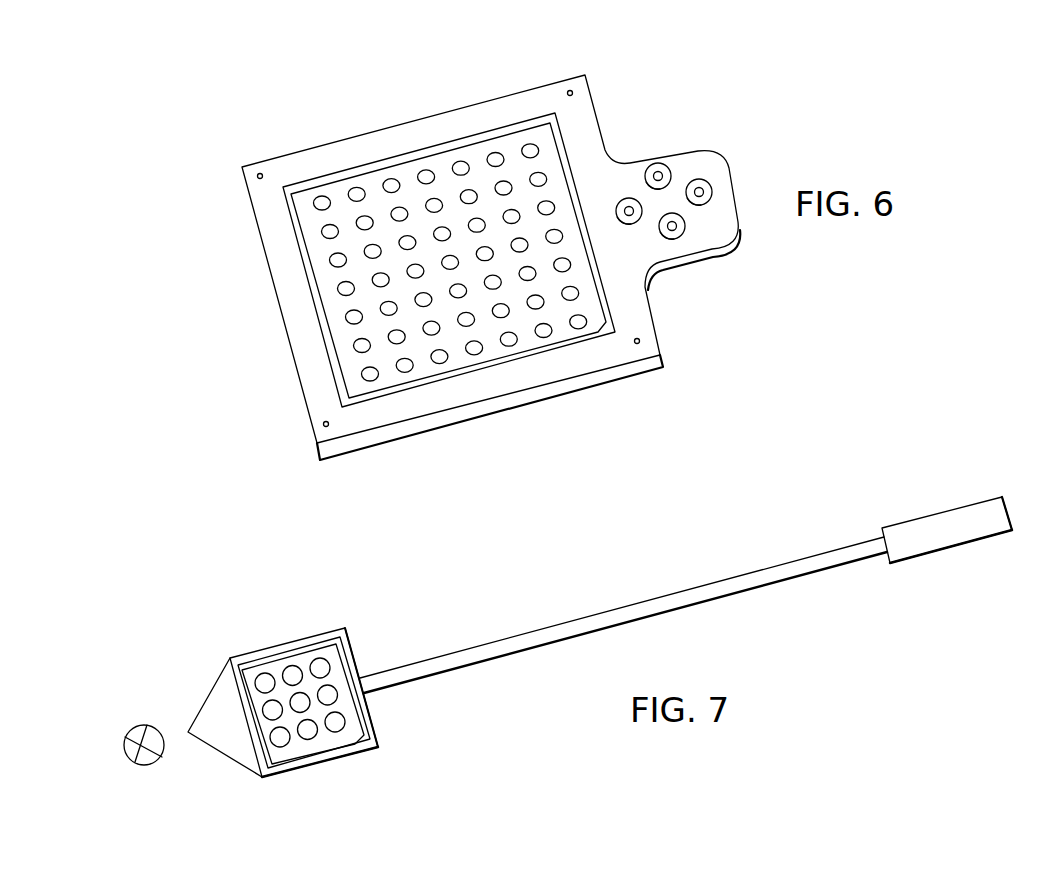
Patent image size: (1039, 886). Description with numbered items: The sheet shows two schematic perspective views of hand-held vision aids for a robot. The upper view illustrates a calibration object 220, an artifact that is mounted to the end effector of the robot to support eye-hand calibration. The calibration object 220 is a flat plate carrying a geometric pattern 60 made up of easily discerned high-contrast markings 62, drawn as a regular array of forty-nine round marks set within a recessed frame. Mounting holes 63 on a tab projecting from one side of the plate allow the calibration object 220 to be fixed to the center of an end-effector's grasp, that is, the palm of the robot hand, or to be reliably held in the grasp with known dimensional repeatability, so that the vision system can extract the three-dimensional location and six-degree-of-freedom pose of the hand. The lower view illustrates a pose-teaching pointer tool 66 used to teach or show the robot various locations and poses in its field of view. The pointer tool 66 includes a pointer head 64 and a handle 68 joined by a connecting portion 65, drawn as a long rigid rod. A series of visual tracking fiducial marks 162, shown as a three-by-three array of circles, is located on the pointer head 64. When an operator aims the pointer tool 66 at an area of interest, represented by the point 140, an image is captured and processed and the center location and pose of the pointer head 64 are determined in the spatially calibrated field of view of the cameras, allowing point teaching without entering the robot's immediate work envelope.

In FIG. 6, the calibration object 220 is at (378, 76).
In FIG. 6, the geometric pattern 60 is at (330, 367).
In FIG. 6, the high-contrast markings 62 is at (318, 197).
In FIG. 6, the mounting holes 63 is at (662, 165).
In FIG. 7, the pointer tool 66 is at (625, 540).
In FIG. 7, the connecting portion 65 is at (728, 599).
In FIG. 7, the handle 68 is at (945, 508).
In FIG. 7, the pointer head 64 is at (320, 762).
In FIG. 7, the visual tracking fiducial marks 162 is at (295, 682).
In FIG. 7, the point 140 is at (142, 722).